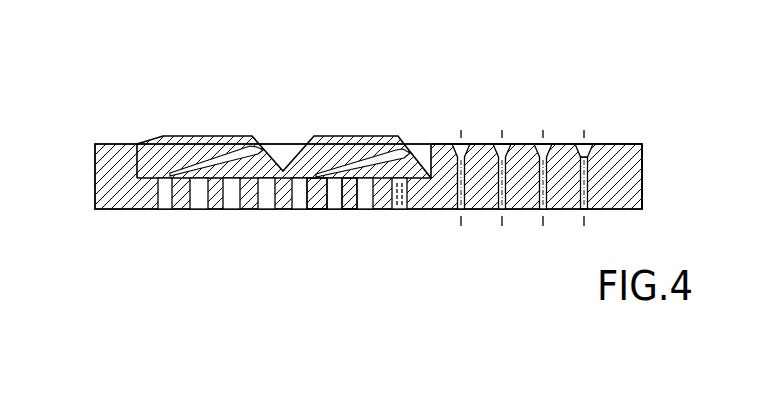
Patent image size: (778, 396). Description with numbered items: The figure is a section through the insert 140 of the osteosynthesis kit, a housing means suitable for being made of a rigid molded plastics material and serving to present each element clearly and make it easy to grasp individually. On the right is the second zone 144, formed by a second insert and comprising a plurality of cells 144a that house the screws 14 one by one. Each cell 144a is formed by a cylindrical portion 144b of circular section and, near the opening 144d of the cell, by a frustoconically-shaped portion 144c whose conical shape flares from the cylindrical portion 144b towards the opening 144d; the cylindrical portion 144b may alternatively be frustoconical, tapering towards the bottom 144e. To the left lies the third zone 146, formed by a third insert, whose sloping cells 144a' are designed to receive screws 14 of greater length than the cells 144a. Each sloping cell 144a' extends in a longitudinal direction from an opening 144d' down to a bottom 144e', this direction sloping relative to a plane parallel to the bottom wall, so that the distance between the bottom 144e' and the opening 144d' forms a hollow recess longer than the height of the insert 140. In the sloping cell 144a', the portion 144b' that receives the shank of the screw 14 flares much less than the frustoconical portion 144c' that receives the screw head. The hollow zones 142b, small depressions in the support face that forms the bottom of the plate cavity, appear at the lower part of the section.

The insert 140 is at (336, 172).
The screw 14 is at (270, 146).
The third zone 146 is at (314, 110).
The second zone 144 is at (536, 97).
The cell 144a is at (623, 111).
The sloping cell 144a' is at (270, 121).
The cylindrical portion 144b is at (560, 207).
The shank-receiving portion 144b' is at (351, 215).
The frustoconically-shaped portion 144c is at (569, 126).
The frustoconical portion 144c' is at (436, 138).
The opening 144d is at (660, 176).
The opening 144d' is at (411, 215).
The bottom 144e is at (626, 233).
The bottom 144e' is at (293, 215).
The hollow zones 142b is at (197, 211).